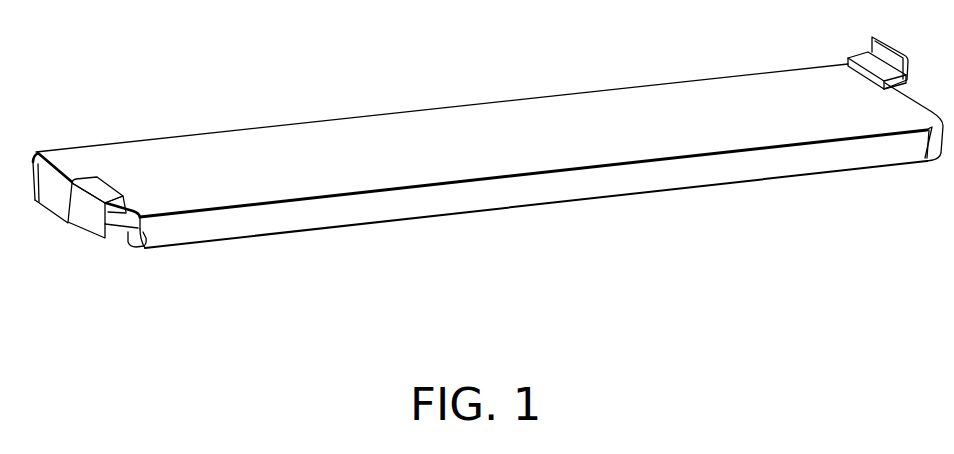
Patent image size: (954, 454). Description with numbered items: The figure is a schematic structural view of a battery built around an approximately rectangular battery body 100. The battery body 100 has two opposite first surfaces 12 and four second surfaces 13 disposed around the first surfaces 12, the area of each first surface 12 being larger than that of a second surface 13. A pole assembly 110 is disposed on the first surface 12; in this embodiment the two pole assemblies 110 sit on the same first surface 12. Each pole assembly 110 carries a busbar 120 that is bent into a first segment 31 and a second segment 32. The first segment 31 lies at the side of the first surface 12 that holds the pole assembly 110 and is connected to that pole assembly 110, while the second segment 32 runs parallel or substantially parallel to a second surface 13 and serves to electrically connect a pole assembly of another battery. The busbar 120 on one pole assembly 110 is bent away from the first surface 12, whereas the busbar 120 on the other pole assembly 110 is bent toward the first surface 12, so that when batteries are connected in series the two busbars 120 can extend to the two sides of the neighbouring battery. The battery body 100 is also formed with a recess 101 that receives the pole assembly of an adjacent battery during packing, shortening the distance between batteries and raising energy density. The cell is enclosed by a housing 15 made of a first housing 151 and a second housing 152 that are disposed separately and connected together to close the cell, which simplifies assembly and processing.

The battery body 100 is at (485, 182).
The first surface 12 is at (290, 152).
The second surface 13 is at (395, 203).
The housing 15 is at (533, 237).
The first housing 151 is at (533, 137).
The second housing 152 is at (429, 229).
The pole assembly 110 is at (140, 217).
The recess 101 is at (115, 233).
The busbar 120 is at (468, 128).
The first segment 31 is at (102, 193).
The second segment 32 is at (82, 210).